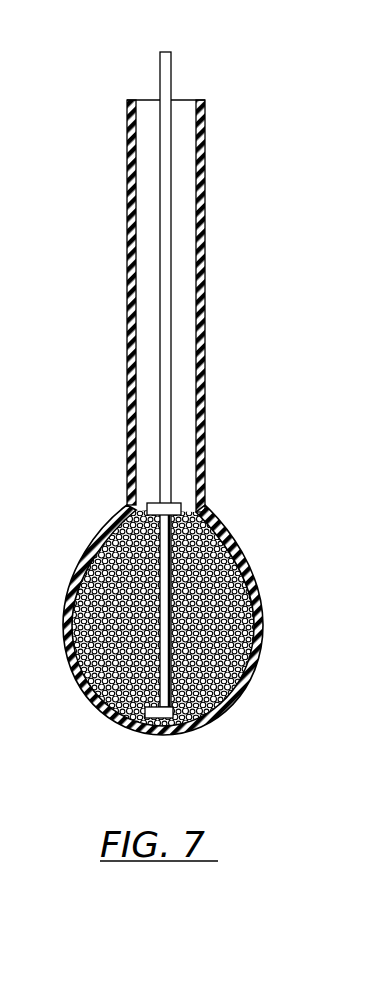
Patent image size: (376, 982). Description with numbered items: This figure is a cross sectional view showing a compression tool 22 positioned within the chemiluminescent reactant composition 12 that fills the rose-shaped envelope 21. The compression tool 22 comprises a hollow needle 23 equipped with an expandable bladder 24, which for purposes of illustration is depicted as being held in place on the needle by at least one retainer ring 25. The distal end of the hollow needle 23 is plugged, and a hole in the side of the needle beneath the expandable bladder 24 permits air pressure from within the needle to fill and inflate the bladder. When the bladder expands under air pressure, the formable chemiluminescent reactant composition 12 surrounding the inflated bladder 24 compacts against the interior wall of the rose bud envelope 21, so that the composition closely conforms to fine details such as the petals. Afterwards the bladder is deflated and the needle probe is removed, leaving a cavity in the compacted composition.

The chemiluminescent reactant composition 12 is at (262, 637).
The rose-shaped envelope 21 is at (205, 172).
The compression tool 22 is at (198, 391).
The hollow needle 23 is at (172, 65).
The expandable bladder 24 is at (228, 577).
The retainer ring 25 is at (181, 507).